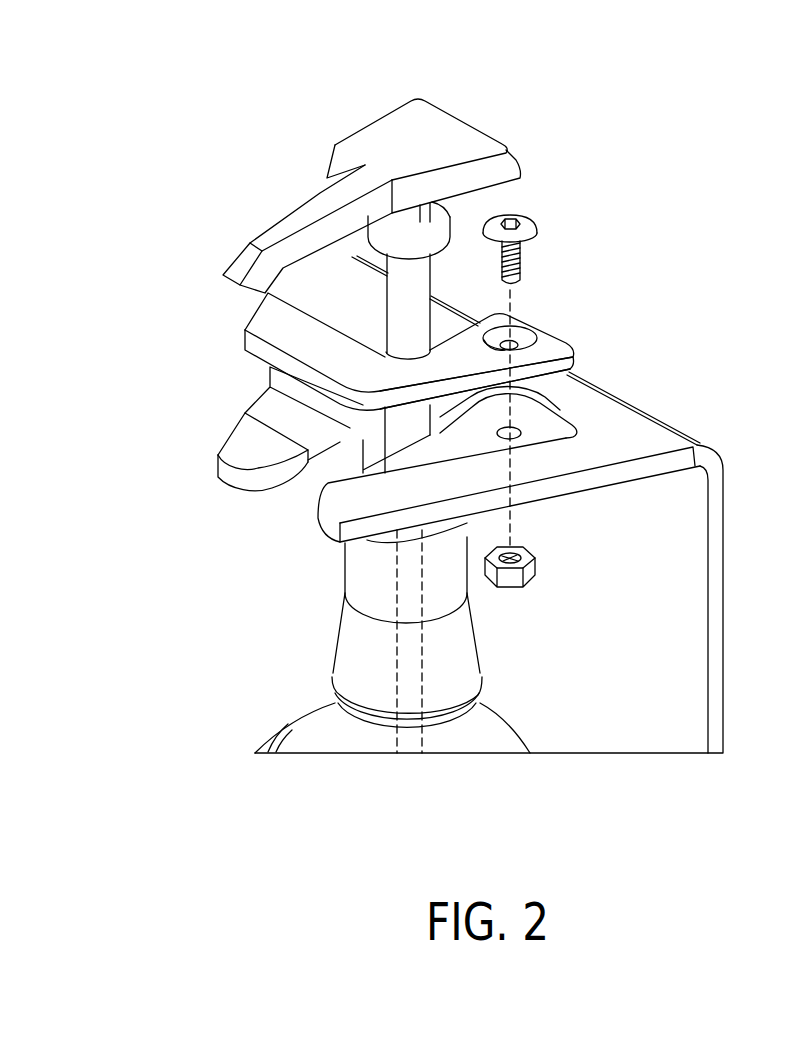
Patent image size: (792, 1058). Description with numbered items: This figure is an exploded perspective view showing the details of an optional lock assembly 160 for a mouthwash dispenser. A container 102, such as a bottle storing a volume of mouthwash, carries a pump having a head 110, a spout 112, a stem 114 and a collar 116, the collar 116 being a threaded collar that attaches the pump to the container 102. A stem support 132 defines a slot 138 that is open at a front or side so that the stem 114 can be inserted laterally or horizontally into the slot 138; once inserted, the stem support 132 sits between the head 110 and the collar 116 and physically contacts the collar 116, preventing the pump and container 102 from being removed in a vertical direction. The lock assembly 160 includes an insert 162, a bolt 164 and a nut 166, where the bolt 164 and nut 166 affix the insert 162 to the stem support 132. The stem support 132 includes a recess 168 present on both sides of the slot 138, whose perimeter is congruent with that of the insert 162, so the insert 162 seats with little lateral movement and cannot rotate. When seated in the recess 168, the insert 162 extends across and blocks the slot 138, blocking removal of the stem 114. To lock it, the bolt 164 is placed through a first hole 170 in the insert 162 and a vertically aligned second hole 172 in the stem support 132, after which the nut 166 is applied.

The container 102 is at (488, 735).
The head 110 is at (410, 133).
The spout 112 is at (243, 260).
The stem 114 is at (400, 290).
The collar 116 is at (363, 573).
The stem support 132 is at (340, 311).
The slot 138 is at (295, 507).
The lock assembly 160 is at (542, 298).
The insert 162 is at (560, 347).
The bolt 164 is at (527, 223).
The nut 166 is at (537, 577).
The recess 168 is at (287, 417).
The first hole 170 is at (518, 345).
The second hole 172 is at (517, 433).